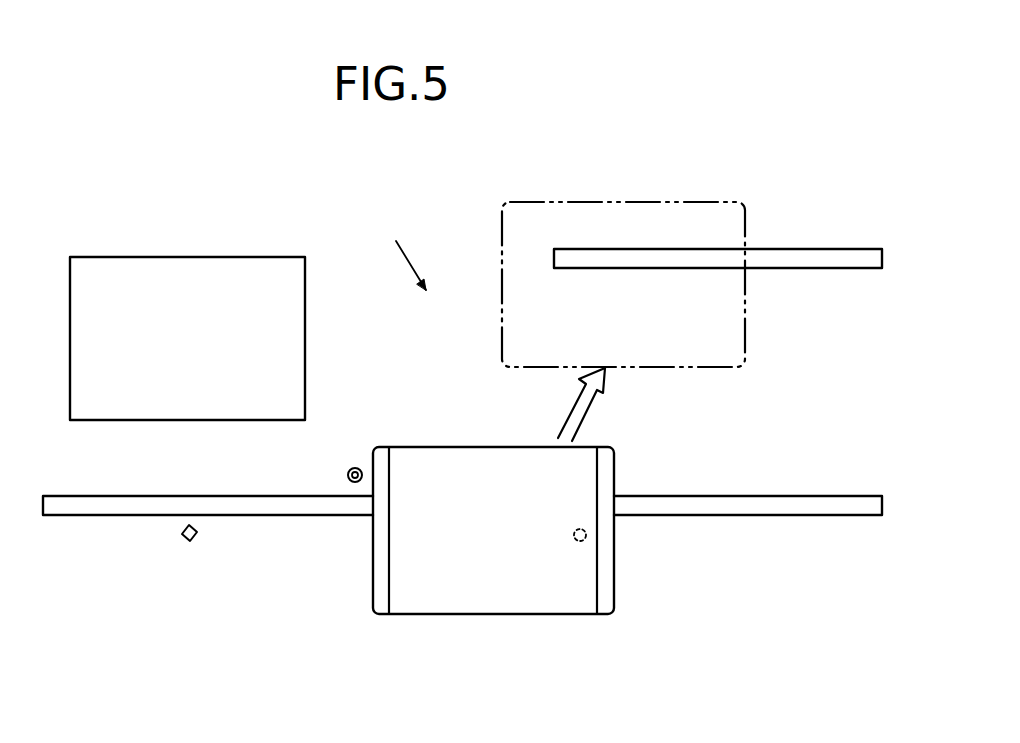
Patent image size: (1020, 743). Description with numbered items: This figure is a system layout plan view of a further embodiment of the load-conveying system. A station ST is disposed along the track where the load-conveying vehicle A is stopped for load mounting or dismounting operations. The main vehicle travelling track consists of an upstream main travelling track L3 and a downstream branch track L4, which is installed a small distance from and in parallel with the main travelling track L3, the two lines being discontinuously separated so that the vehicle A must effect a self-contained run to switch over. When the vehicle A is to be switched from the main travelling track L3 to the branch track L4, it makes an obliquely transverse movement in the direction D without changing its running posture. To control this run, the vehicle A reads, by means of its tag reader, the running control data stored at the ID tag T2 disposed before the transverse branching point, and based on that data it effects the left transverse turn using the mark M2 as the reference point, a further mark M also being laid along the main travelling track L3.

The station ST is at (170, 257).
The transport direction D is at (399, 248).
The branch track L4 is at (793, 249).
The main travelling track L3 is at (757, 496).
The load-conveying vehicle A is at (745, 328).
The ID tag T2 is at (356, 467).
The mark M is at (182, 543).
The mark M2 is at (585, 539).